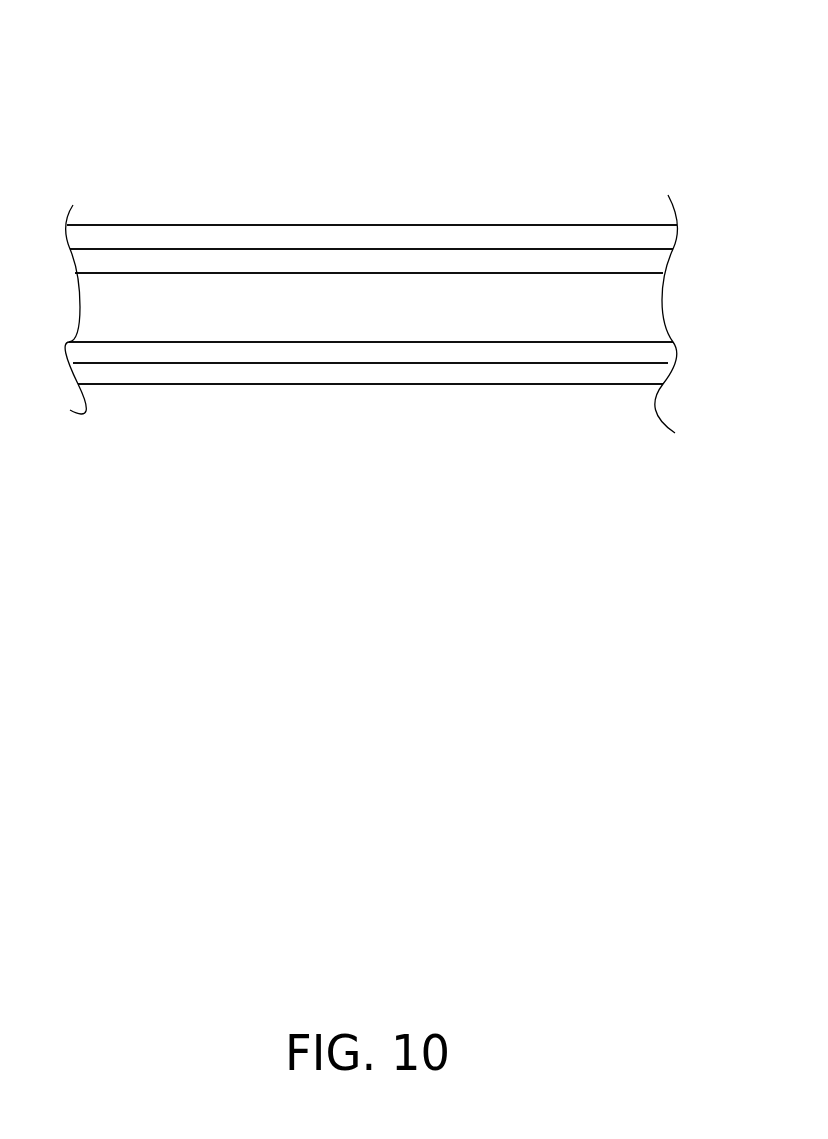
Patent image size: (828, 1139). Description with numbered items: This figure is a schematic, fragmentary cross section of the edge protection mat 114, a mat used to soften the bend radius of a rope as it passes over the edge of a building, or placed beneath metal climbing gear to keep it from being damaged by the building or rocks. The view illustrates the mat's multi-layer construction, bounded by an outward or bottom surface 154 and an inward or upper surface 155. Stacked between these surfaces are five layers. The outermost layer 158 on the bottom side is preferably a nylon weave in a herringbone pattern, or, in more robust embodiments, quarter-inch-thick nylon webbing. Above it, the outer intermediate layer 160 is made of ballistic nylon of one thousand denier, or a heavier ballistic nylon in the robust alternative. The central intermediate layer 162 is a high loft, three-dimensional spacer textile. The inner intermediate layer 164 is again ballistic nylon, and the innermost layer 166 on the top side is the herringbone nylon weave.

The edge protection mat 114 is at (182, 158).
The bottom surface 154 is at (485, 385).
The upper surface 155 is at (568, 222).
The outermost layer 158 is at (310, 375).
The outer intermediate layer 160 is at (192, 354).
The central intermediate layer 162 is at (264, 307).
The inner intermediate layer 164 is at (360, 262).
The innermost layer 166 is at (464, 238).